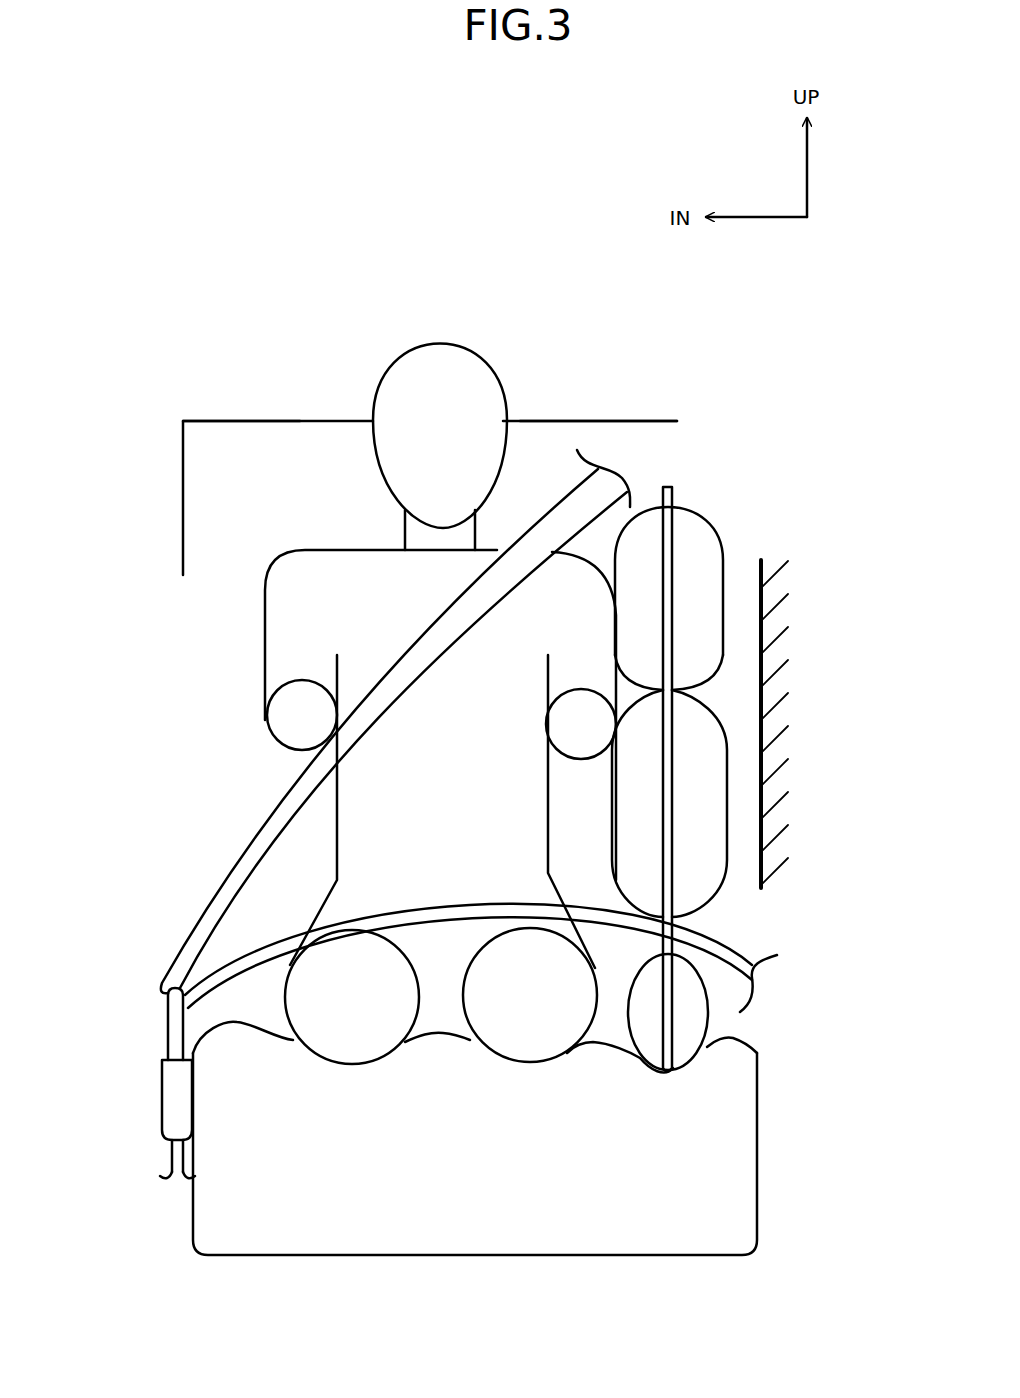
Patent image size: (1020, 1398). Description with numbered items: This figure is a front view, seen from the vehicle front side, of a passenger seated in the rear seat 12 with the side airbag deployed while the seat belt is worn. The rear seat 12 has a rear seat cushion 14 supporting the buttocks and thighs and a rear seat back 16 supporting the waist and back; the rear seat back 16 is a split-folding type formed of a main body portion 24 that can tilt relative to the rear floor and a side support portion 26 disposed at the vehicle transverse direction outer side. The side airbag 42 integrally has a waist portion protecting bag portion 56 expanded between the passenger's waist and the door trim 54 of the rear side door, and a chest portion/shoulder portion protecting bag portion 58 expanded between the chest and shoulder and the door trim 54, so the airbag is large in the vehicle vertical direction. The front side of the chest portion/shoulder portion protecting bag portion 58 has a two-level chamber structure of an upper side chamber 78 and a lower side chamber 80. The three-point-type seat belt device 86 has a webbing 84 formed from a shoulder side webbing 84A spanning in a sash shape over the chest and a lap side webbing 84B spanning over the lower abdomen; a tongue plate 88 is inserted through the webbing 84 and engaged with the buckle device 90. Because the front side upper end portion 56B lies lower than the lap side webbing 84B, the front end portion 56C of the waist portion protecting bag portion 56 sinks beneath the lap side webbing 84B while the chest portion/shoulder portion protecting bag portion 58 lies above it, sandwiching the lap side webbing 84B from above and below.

The rear seat 12 is at (402, 1266).
The rear seat cushion 14 is at (485, 1233).
The rear seat back 16 is at (333, 420).
The main body portion 24 is at (275, 420).
The side support portion 26 is at (597, 420).
The side airbag 42 is at (718, 498).
The door trim 54 is at (758, 575).
The waist portion protecting bag portion 56 is at (737, 981).
The front side upper end portion 56B is at (749, 912).
The front end portion 56C is at (690, 1025).
The chest portion/shoulder portion protecting bag portion 58 is at (755, 712).
The upper side chamber 78 is at (720, 648).
The lower side chamber 80 is at (729, 803).
The webbing 84 is at (432, 731).
The shoulder side webbing 84A is at (210, 908).
The lap side webbing 84B is at (230, 967).
The three-point-type seat belt device 86 is at (125, 1075).
The tongue plate 88 is at (175, 1032).
The buckle device 90 is at (173, 1105).